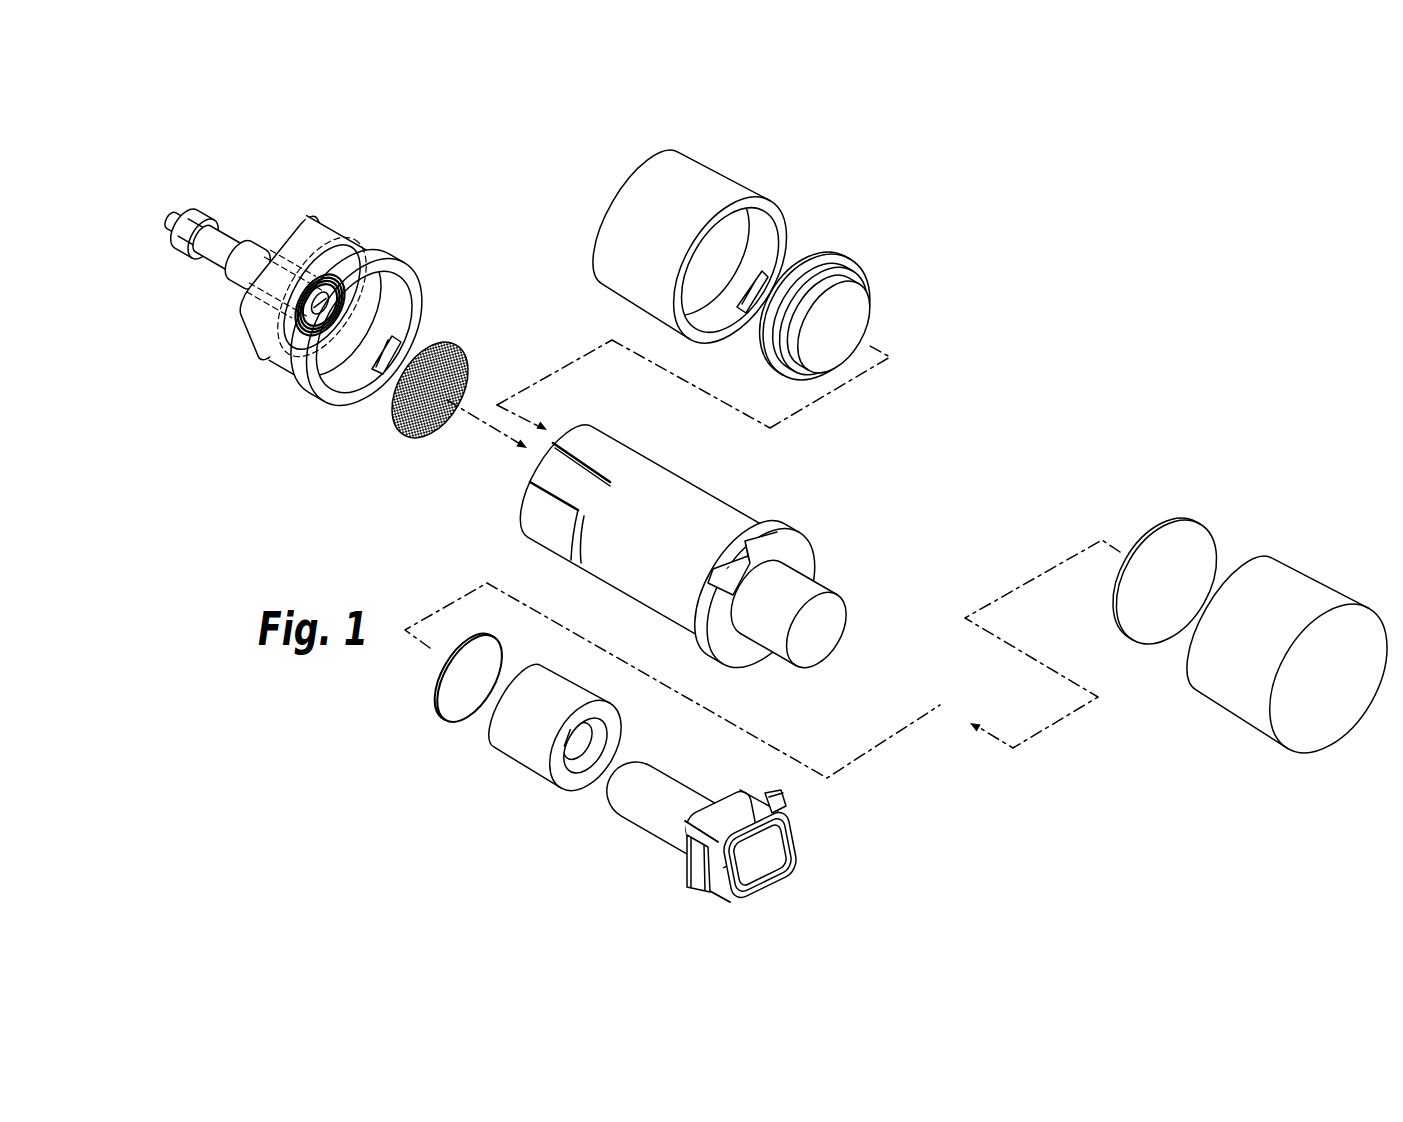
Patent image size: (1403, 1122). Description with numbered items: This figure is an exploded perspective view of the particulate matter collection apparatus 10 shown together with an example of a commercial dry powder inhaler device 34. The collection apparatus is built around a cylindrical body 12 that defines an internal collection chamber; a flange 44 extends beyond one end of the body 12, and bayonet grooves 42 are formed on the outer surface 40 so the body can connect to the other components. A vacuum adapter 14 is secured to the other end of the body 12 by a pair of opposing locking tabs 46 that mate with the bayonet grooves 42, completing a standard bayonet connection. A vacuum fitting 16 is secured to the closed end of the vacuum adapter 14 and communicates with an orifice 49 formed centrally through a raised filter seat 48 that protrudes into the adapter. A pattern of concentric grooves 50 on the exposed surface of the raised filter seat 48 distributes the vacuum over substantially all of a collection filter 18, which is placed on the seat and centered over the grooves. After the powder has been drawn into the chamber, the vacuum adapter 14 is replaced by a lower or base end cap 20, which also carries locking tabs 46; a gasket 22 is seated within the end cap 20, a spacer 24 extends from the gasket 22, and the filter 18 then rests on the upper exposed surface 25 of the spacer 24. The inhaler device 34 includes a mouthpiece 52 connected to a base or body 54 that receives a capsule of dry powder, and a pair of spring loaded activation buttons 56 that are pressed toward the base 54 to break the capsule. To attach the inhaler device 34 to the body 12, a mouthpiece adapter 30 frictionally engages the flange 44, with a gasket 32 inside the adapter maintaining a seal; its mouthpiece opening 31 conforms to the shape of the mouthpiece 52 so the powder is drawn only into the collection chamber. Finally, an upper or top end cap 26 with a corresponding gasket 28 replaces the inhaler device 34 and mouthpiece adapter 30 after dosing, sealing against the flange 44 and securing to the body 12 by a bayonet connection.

The particulate matter collection apparatus 10 is at (1052, 424).
The body 12 is at (711, 544).
The vacuum adapter 14 is at (329, 284).
The vacuum fitting 16 is at (242, 207).
The collection filter 18 is at (445, 398).
The lower or base end cap 20 is at (737, 178).
The gasket 22 is at (827, 258).
The spacer 24 is at (833, 275).
The upper exposed surface 25 is at (859, 308).
The upper or top end cap 26 is at (1263, 576).
The gasket 28 is at (1180, 520).
The mouthpiece adapter 30 is at (556, 758).
The mouthpiece opening 31 is at (577, 760).
The gasket 32 is at (435, 707).
The inhaler device 34 is at (727, 818).
The outer surface 40 is at (703, 490).
The bayonet grooves 42 is at (583, 487).
The flange 44 is at (846, 607).
The locking tabs 46 is at (382, 370).
The raised filter seat 48 is at (311, 255).
The orifice 49 is at (300, 312).
The concentric grooves 50 is at (334, 282).
The mouthpiece 52 is at (652, 787).
The base or body 54 is at (800, 852).
The activation buttons 56 is at (776, 792).